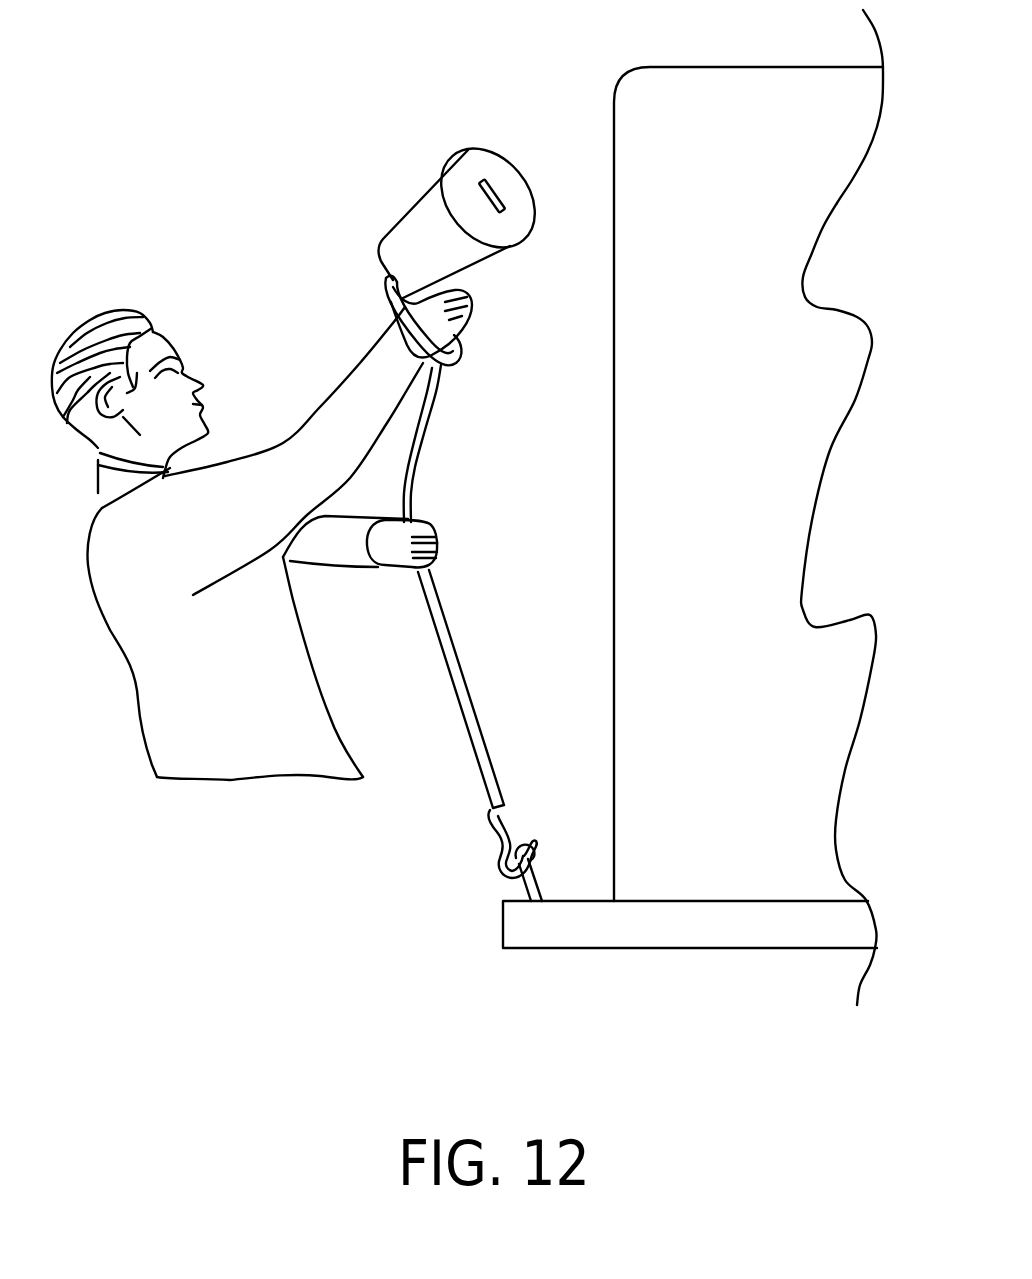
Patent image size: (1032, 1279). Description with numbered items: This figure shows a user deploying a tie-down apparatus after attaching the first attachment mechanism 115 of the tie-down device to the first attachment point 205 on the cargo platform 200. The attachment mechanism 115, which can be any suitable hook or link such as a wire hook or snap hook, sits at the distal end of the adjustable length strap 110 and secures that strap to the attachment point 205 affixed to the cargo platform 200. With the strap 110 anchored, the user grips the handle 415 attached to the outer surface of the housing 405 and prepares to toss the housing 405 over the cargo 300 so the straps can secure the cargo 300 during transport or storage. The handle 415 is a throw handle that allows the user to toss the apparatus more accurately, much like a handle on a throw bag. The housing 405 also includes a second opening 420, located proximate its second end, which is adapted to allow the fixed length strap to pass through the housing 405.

The adjustable length strap 110 is at (420, 472).
The attachment mechanism 115 is at (507, 833).
The cargo platform 200 is at (586, 932).
The attachment point 205 is at (522, 880).
The cargo 300 is at (725, 82).
The housing 405 is at (410, 208).
The handle 415 is at (390, 283).
The second opening 420 is at (487, 178).